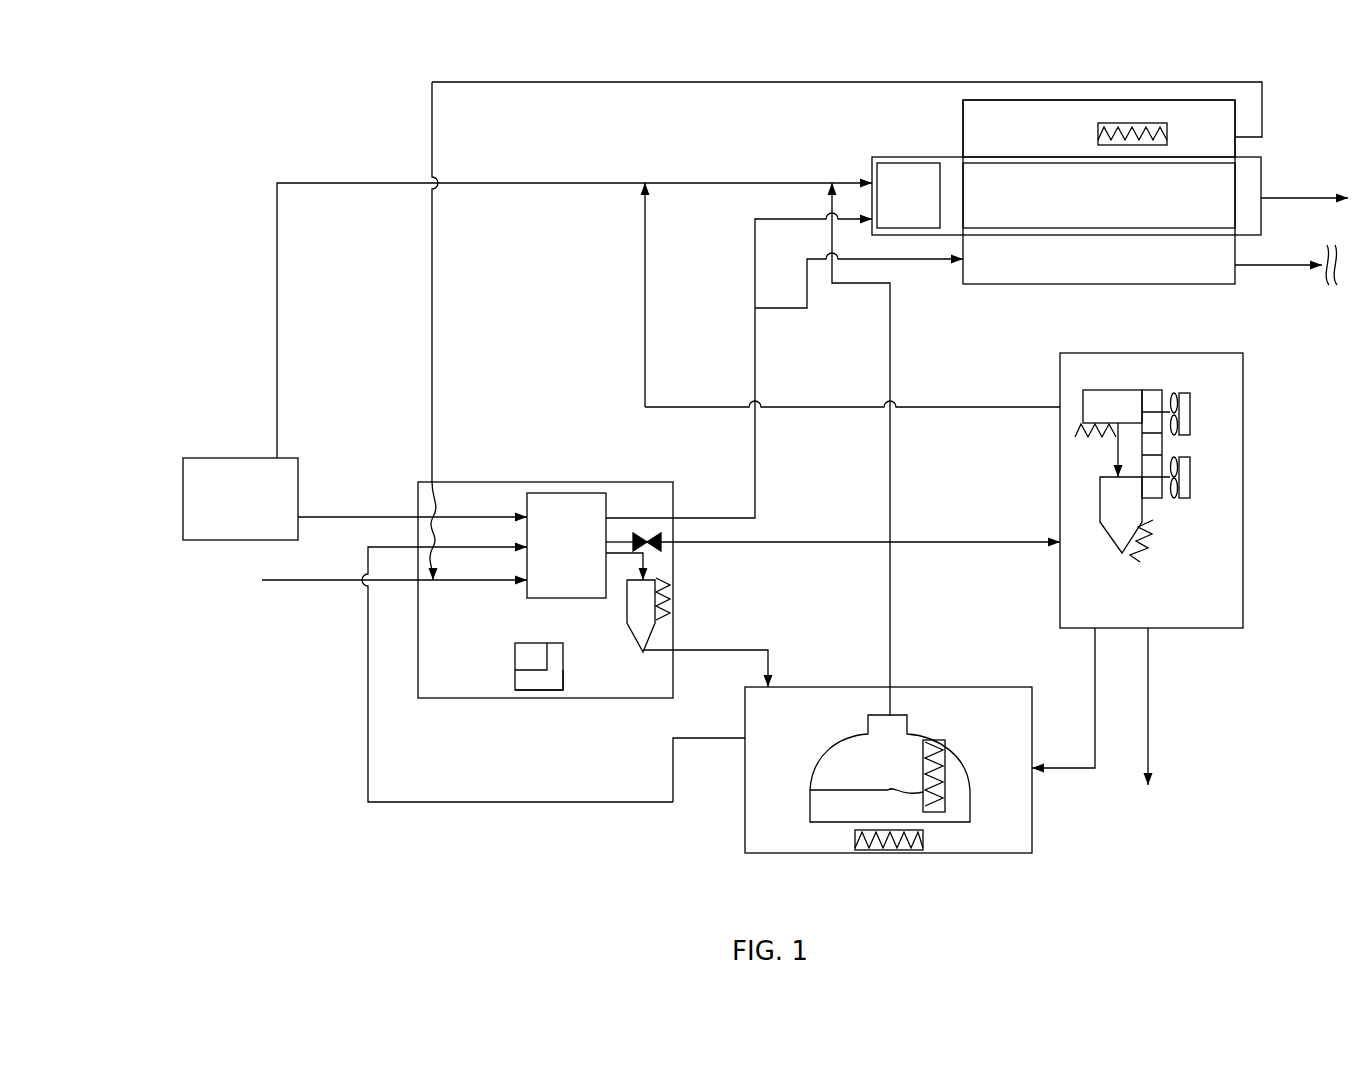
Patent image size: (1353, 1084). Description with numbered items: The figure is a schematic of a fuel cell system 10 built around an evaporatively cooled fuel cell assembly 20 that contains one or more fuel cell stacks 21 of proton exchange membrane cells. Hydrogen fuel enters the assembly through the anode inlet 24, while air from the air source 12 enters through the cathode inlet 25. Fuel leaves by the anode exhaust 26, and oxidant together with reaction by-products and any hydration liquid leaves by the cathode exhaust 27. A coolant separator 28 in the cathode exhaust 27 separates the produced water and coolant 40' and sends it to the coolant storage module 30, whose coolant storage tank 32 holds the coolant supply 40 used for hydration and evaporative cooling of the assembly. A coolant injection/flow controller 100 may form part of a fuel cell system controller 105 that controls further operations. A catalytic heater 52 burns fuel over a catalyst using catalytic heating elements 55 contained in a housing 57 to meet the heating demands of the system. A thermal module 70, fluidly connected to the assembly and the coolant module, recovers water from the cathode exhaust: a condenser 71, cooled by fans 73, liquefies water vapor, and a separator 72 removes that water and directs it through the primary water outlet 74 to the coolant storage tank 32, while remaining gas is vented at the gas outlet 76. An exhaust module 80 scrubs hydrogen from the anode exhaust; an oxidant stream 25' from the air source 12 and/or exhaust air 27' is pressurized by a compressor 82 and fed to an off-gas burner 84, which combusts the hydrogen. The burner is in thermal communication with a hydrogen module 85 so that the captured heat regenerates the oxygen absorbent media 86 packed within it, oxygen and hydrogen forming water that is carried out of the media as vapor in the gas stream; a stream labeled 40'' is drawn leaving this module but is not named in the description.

The fuel cell system 10 is at (358, 95).
The air source 12 is at (218, 458).
The fuel cell assembly 20 is at (580, 482).
The fuel cell stack 21 is at (550, 561).
The anode inlet 24 is at (302, 614).
The cathode inlet 25 is at (412, 530).
The oxidant stream 25' is at (574, 320).
The anode exhaust 26 is at (756, 476).
The cathode exhaust 27 is at (833, 568).
The exhaust air 27' is at (852, 317).
The coolant separator 28 is at (636, 605).
The coolant storage module 30 is at (764, 721).
The coolant storage tank 32 is at (825, 760).
The coolant supply 40 is at (642, 683).
The produced water and coolant 40' is at (727, 664).
The water discharge line 40'' is at (1286, 258).
The catalytic heater 52 is at (955, 803).
The catalytic heating element 55 is at (1133, 123).
The housing 57 is at (930, 745).
The thermal module 70 is at (1134, 384).
The condenser 71 is at (1096, 421).
The separator 72 is at (1104, 518).
The fans 73 is at (1190, 410).
The primary water outlet 74 is at (1052, 671).
The gas outlet 76 is at (1154, 744).
The exhaust module 80 is at (1250, 188).
The compressor 82 is at (892, 209).
The off-gas burner 84 is at (1083, 209).
The hydrogen module 85 is at (1207, 298).
The oxygen absorbent media 86 is at (1016, 139).
The coolant injection/flow controller 100 is at (522, 655).
The fuel cell system controller 105 is at (556, 688).